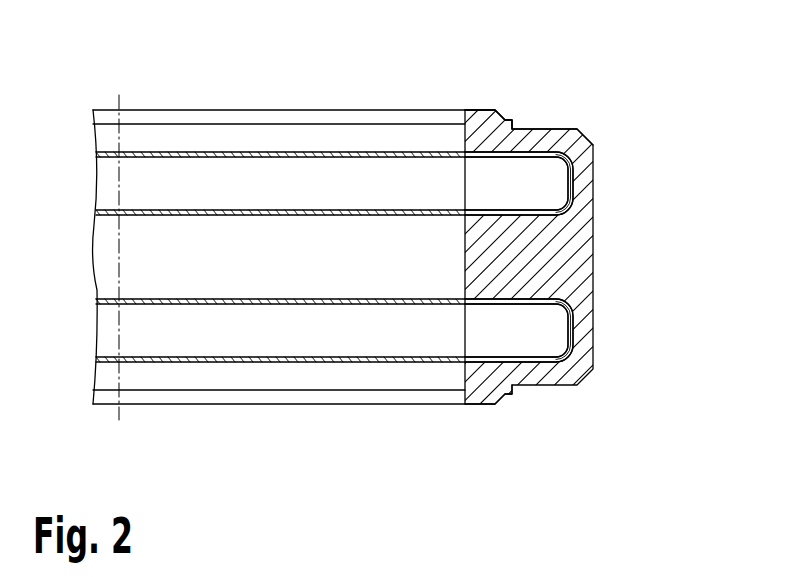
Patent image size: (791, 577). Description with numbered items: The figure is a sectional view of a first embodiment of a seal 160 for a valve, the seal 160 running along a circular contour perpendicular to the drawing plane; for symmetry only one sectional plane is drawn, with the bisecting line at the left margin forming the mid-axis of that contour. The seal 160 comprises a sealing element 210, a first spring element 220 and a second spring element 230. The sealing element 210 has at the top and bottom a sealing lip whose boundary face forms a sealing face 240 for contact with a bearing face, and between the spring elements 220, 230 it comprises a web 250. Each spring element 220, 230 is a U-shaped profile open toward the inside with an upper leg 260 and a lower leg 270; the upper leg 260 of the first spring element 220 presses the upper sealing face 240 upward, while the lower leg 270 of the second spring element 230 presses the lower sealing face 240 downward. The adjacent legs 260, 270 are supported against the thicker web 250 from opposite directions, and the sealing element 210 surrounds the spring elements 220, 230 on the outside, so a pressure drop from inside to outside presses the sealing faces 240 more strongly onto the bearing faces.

The seal 160 is at (442, 244).
The sealing element 210 is at (497, 126).
The first spring element 220 is at (575, 168).
The second spring element 230 is at (575, 333).
The sealing face 240 is at (491, 98).
The web 250 is at (553, 252).
The upper leg 260 is at (592, 255).
The lower leg 270 is at (592, 260).